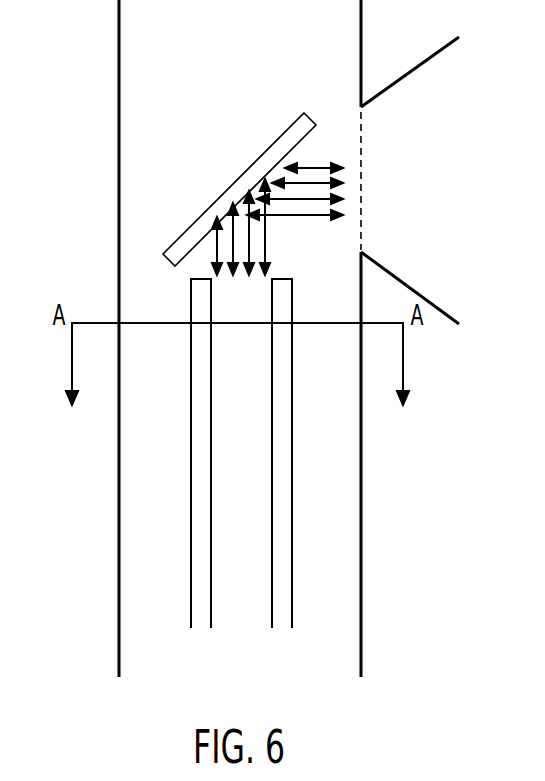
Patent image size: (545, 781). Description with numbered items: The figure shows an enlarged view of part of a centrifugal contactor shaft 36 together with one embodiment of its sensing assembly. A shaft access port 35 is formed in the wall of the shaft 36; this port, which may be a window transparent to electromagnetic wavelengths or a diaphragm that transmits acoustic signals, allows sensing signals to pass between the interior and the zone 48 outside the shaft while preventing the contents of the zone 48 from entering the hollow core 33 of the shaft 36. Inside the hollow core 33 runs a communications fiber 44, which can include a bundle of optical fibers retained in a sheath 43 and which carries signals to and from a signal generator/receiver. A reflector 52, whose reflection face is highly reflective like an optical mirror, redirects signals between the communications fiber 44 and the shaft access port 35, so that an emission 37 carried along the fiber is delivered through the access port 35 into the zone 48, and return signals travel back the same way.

The hollow core 33 is at (231, 88).
The shaft access port 35 is at (363, 202).
The shaft 36 is at (119, 165).
The emission 37 is at (427, 167).
The sheath 43 is at (191, 492).
The communications fiber 44 is at (292, 537).
The zone 48 is at (394, 42).
The reflector 52 is at (220, 197).